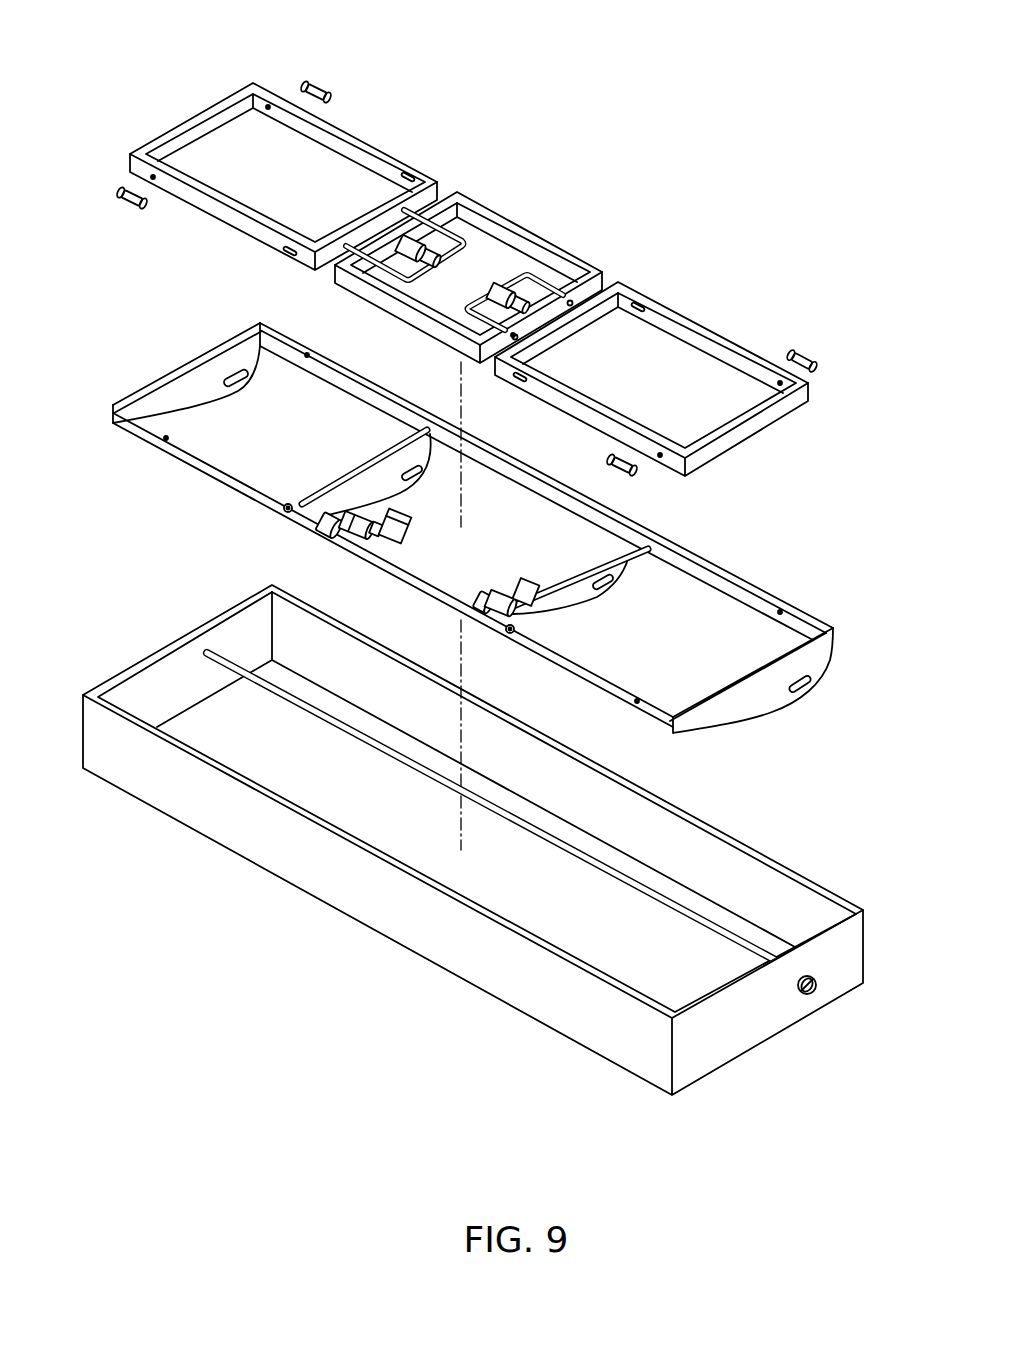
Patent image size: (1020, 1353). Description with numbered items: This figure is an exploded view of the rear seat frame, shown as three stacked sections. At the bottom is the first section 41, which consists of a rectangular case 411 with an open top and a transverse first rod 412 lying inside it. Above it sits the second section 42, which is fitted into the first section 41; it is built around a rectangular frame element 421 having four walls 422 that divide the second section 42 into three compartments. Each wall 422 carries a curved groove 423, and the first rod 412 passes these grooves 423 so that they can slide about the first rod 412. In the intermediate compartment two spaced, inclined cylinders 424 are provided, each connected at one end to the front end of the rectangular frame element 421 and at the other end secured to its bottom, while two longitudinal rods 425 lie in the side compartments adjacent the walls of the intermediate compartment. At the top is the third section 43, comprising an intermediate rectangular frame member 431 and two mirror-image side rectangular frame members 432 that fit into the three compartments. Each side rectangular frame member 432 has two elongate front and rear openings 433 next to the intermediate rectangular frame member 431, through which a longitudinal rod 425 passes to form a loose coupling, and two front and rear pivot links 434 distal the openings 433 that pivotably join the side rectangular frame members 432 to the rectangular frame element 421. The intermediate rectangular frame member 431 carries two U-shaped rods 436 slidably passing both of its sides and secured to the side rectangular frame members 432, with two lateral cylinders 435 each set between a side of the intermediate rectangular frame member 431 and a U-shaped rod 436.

The first section 41 is at (467, 818).
The rectangular case 411 is at (473, 840).
The first rod 412 is at (498, 844).
The second section 42 is at (463, 557).
The rectangular frame element 421 is at (473, 525).
The wall 422 is at (473, 571).
The curved groove 423 is at (538, 574).
The inclined cylinder 424 is at (368, 563).
The longitudinal rod 425 is at (439, 531).
The third section 43 is at (460, 240).
The intermediate rectangular frame member 431 is at (491, 217).
The side rectangular frame member 432 is at (469, 265).
The opening 433 is at (442, 277).
The pivot link 434 is at (481, 240).
The lateral cylinder 435 is at (521, 194).
The U-shaped rod 436 is at (459, 219).